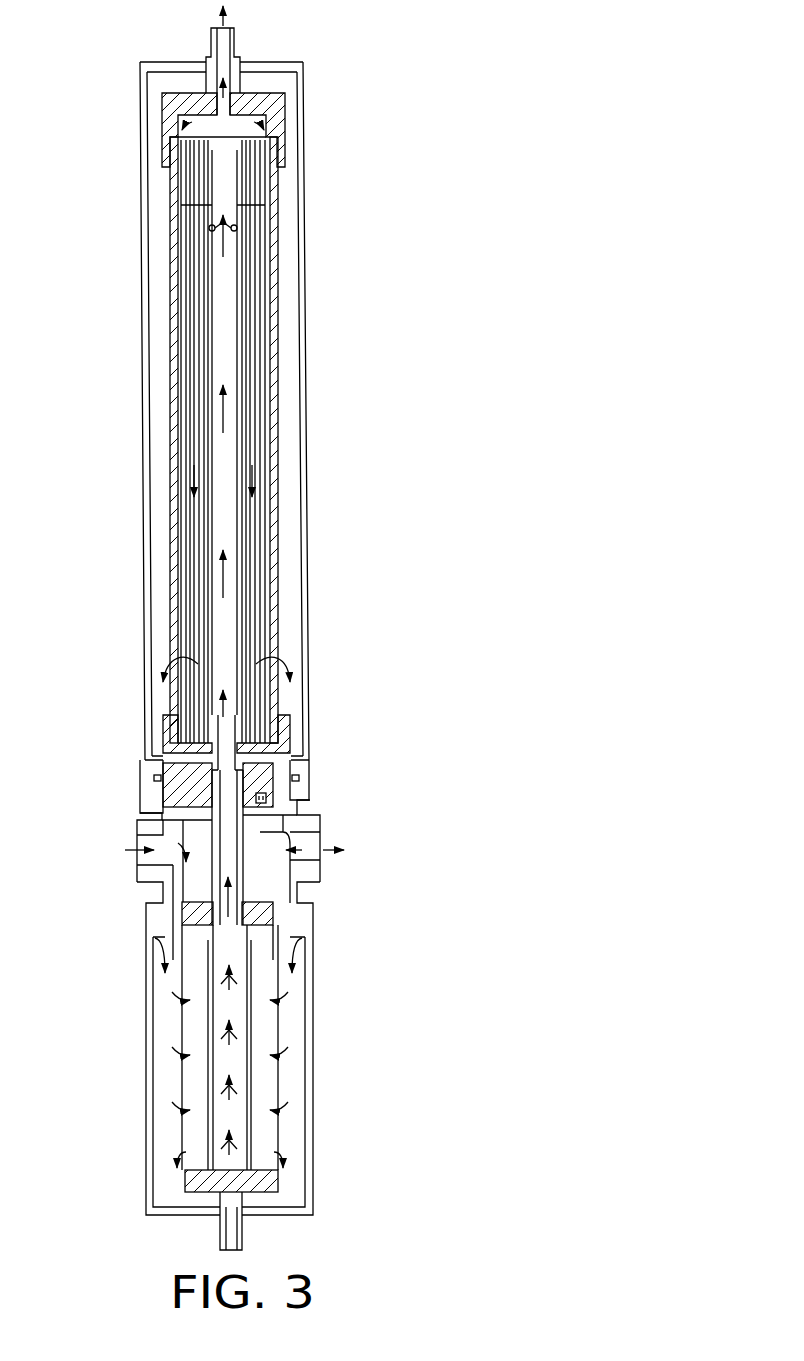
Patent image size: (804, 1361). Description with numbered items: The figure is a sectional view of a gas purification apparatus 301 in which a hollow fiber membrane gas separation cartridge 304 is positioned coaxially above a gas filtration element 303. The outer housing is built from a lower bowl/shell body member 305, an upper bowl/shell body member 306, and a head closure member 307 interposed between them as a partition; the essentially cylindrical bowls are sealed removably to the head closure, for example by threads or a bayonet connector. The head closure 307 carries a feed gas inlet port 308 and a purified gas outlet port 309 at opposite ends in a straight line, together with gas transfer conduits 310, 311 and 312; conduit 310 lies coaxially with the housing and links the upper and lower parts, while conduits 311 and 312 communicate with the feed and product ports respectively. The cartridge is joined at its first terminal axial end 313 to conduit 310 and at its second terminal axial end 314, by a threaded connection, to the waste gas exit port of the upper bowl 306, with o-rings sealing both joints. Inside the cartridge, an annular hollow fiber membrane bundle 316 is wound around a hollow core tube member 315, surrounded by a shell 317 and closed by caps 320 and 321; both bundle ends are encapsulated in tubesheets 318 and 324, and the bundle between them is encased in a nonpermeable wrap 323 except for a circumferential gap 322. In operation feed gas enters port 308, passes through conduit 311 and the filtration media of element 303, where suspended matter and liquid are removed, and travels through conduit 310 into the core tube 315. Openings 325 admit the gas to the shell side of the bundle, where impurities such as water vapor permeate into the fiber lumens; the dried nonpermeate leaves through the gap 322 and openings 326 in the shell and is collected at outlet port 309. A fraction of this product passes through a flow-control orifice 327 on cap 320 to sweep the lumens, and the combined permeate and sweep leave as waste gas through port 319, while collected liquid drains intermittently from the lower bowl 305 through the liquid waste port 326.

The gas purification apparatus 301 is at (382, 54).
The gas filtration element 303 is at (268, 1025).
The hollow fiber membrane gas separation cartridge 304 is at (393, 293).
The lower bowl/shell body member 305 is at (315, 1118).
The upper bowl/shell body member 306 is at (310, 682).
The head closure member 307 is at (143, 870).
The feed gas inlet port 308 is at (147, 860).
The purified gas outlet port 309 is at (307, 858).
The gas transfer conduit 310 is at (230, 842).
The gas transfer conduit 311 is at (183, 878).
The gas transfer conduit 312 is at (260, 822).
The first terminal axial end 313 is at (197, 803).
The second terminal axial end 314 is at (181, 92).
The hollow core tube member 315 is at (270, 378).
The annular hollow fiber membrane bundle 316 is at (193, 263).
The shell 317 is at (280, 505).
The tubesheet 318 is at (280, 717).
The waste gas port 319 is at (223, 53).
The axial end closure or cap 320 is at (180, 783).
The axial end closure or cap 321 is at (165, 112).
The non-encased circumferential region or gap 322 is at (185, 643).
The wrap 323 is at (267, 542).
The tubesheet 324 is at (253, 175).
The openings 325 is at (210, 227).
The openings / liquids waste drain port 326 is at (175, 670).
The flow-control orifice 327 is at (297, 812).